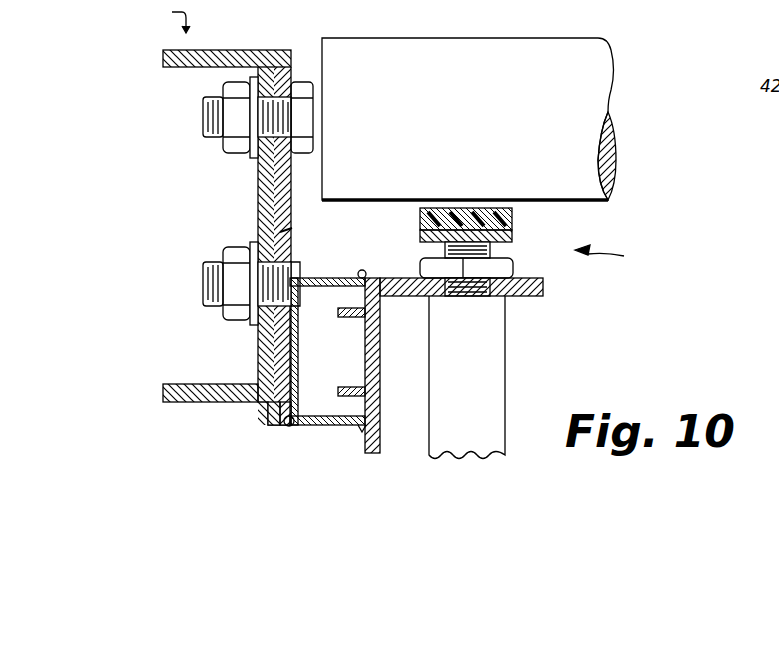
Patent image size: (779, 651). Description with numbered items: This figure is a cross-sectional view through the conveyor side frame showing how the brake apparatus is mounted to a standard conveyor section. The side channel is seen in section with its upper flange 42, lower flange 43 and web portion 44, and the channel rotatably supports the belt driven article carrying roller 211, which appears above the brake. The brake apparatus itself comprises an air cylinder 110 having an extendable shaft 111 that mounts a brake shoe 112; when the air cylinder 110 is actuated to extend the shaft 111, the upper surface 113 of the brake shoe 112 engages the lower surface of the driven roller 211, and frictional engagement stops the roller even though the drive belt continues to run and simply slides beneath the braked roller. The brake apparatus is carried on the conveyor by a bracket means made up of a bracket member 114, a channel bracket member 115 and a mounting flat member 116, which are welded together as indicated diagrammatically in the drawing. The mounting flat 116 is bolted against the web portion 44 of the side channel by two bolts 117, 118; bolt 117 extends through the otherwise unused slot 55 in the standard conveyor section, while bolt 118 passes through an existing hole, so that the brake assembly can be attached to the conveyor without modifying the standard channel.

The upper flange 42 is at (163, 58).
The lower flange 43 is at (163, 392).
The web portion 44 is at (258, 360).
The slot 55 is at (282, 232).
The mounting flat member 116 is at (265, 195).
The bolt 117 is at (203, 286).
The bolt 118 is at (205, 126).
The driven article carrying roller 211 is at (590, 112).
The upper surface of brake shoe 113 is at (455, 208).
The brake shoe 112 is at (512, 218).
The extendable shaft 111 is at (490, 250).
The bracket member 114 is at (380, 398).
The channel bracket member 115 is at (322, 415).
The air cylinder 110 is at (493, 372).